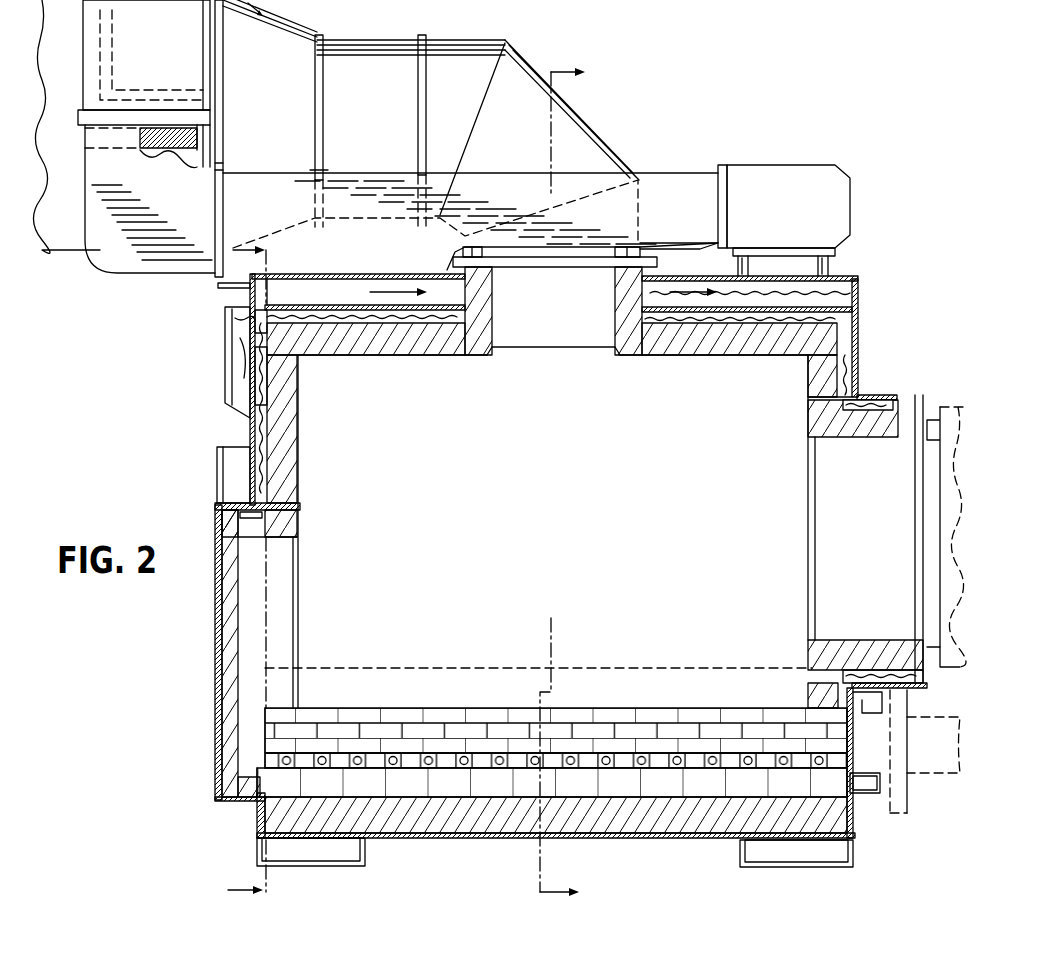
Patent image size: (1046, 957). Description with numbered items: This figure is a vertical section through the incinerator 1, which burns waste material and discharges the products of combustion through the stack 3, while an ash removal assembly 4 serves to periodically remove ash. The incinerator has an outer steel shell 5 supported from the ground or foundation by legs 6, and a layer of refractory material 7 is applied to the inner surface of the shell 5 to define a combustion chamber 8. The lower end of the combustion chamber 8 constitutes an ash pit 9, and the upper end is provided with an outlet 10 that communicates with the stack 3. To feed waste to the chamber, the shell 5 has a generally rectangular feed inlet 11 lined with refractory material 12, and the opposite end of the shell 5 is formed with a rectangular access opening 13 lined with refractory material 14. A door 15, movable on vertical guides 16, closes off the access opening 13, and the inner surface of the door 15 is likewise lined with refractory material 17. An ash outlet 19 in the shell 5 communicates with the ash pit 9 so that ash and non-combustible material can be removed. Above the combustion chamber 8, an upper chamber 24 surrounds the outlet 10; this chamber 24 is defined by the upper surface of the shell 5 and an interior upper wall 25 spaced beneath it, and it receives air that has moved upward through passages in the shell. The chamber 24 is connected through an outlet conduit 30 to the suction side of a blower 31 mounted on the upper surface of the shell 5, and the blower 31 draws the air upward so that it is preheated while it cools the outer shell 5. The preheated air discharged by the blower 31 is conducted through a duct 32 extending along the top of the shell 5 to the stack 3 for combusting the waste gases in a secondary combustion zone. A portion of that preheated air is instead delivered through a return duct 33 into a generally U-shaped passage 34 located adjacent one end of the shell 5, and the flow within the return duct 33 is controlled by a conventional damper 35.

The incinerator 1 is at (868, 314).
The stack 3 is at (650, 175).
The ash removal assembly 4 is at (258, 573).
The outer steel shell 5 is at (852, 360).
The legs 6 is at (365, 852).
The refractory material 7 is at (730, 347).
The combustion chamber 8 is at (572, 450).
The ash pit 9 is at (473, 730).
The outlet 10 is at (494, 287).
The feed inlet 11 is at (882, 398).
The refractory material 12 is at (883, 425).
The access opening 13 is at (245, 505).
The refractory material 14 is at (282, 541).
The door 15 is at (215, 669).
The vertical guides 16 is at (222, 463).
The refractory material 17 is at (222, 582).
The ash outlet 19 is at (880, 720).
The upper chamber 24 is at (358, 285).
The interior upper wall 25 is at (405, 312).
The outlet conduit 30 is at (830, 265).
The blower 31 is at (817, 178).
The duct 32 is at (513, 185).
The return duct 33 is at (225, 365).
The U-shaped passage 34 is at (246, 385).
The damper 35 is at (250, 320).